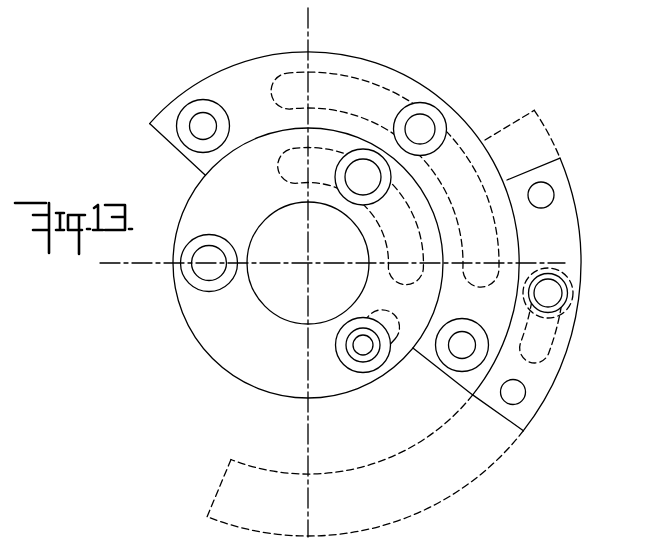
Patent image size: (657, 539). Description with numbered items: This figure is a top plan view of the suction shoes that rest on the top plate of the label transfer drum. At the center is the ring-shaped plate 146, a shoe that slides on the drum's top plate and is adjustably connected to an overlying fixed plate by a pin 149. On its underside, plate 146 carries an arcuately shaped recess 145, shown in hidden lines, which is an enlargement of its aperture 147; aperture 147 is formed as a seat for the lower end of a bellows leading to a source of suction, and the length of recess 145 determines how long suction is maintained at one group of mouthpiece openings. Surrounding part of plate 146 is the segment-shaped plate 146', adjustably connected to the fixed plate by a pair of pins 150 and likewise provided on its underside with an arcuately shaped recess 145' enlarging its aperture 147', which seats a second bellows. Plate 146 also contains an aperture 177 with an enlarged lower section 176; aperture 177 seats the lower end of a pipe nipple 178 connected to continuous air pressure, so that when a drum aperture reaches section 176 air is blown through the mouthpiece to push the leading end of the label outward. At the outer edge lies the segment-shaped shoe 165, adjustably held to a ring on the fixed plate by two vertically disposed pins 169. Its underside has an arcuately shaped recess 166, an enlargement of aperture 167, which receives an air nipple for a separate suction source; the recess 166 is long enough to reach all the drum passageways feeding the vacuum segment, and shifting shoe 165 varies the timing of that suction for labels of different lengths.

The arcuately shaped recess 145 is at (351, 221).
The arcuately shaped recess 145' is at (390, 188).
The ring-shaped plate 146 is at (308, 263).
The segment-shaped plate 146' is at (335, 214).
The aperture 147 is at (348, 177).
The aperture 147' is at (446, 119).
The pin 149 is at (209, 252).
The pins 150 is at (198, 120).
The segment-shaped shoe 165 is at (552, 372).
The arcuately shaped recess 166 is at (552, 333).
The aperture 167 is at (562, 293).
The pins 169 is at (548, 190).
The enlarged lower section 176 is at (392, 322).
The aperture 177 is at (360, 348).
The pipe nipple 178 is at (368, 362).